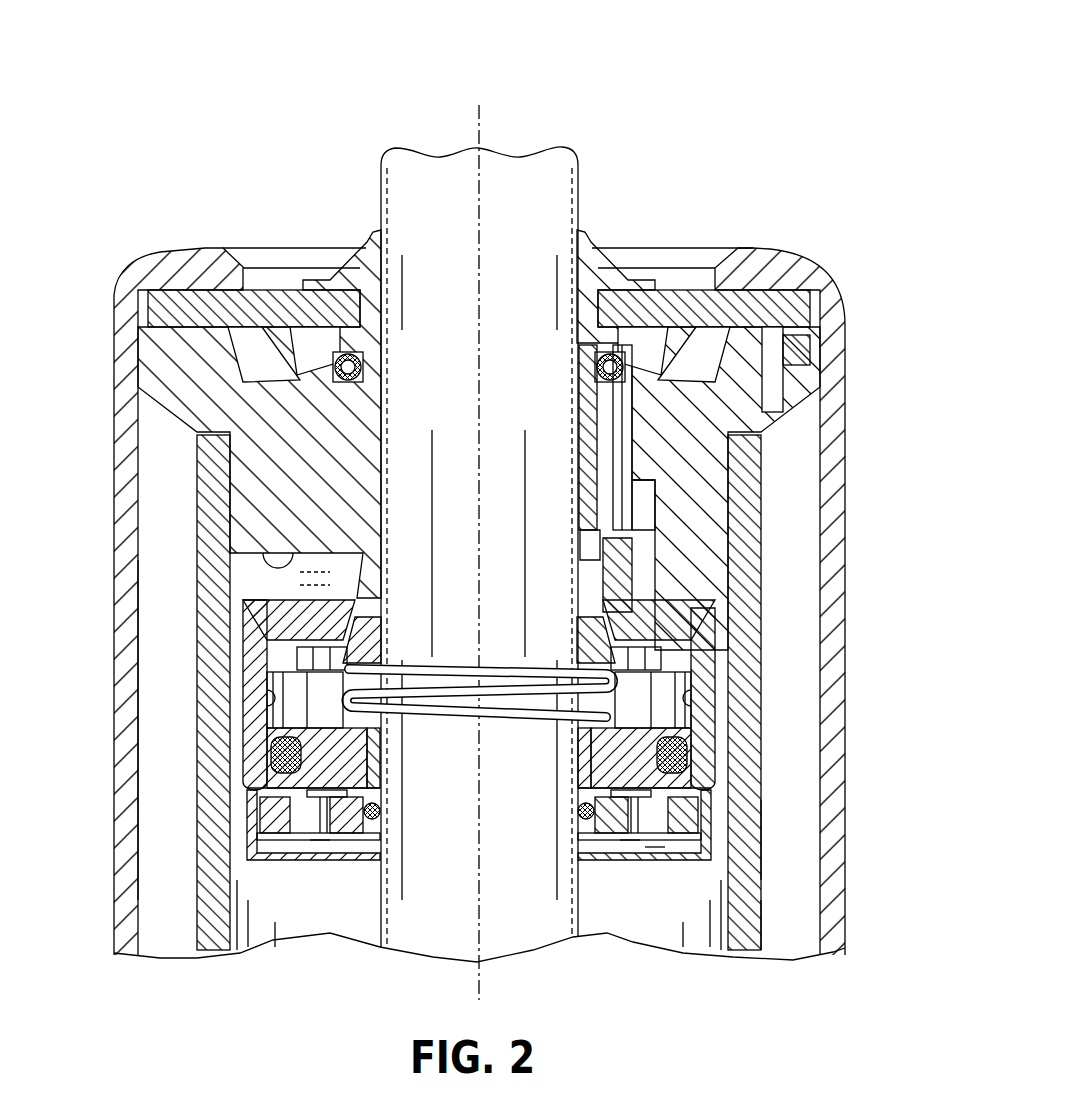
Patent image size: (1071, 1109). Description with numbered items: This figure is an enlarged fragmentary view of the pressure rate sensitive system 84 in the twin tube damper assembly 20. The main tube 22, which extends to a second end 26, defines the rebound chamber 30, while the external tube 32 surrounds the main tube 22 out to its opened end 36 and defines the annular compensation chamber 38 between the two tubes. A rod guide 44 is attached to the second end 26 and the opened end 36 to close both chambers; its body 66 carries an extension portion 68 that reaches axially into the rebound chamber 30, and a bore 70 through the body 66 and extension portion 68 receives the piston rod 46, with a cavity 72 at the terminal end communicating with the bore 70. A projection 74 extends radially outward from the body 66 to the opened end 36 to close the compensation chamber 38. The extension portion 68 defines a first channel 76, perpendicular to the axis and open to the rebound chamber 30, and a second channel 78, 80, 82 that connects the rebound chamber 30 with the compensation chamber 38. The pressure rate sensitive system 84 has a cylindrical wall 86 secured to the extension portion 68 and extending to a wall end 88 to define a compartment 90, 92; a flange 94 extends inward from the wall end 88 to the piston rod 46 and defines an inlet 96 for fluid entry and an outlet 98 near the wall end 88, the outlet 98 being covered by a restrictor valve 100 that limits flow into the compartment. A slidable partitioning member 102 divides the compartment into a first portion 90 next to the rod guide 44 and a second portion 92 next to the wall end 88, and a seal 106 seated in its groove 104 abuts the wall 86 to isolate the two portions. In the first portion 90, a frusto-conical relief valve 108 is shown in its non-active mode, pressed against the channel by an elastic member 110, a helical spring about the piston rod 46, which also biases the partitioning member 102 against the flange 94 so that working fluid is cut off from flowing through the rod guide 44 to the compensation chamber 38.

The twin tube damper assembly 20 is at (765, 128).
The main tube 22 is at (760, 862).
The second end 26 is at (197, 452).
The rebound chamber 30 is at (760, 942).
The external tube 32 is at (125, 578).
The opened end 36 is at (126, 286).
The compensation chamber 38 is at (135, 797).
The rod guide 44 is at (735, 400).
The piston rod 46 is at (553, 183).
The body 66 is at (243, 507).
The extension portion 68 is at (265, 632).
The bore 70 is at (590, 575).
The cavity 72 is at (653, 653).
The projection 74 is at (150, 372).
The first channel 76 is at (262, 560).
The second channel 78 is at (640, 595).
The second channel 80 is at (735, 322).
The second channel 82 is at (800, 372).
The pressure rate sensitive system 84 is at (267, 818).
The wall 86 is at (250, 698).
The wall end 88 is at (760, 823).
The first portion 90 is at (250, 714).
The second portion 92 is at (288, 793).
The flange 94 is at (672, 822).
The inlet 96 is at (632, 837).
The outlet 98 is at (320, 800).
The restrictor valve 100 is at (648, 840).
The partitioning member 102 is at (615, 740).
The groove 104 is at (270, 770).
The seal 106 is at (248, 757).
The relief valve 108 is at (365, 633).
The elastic member 110 is at (490, 672).